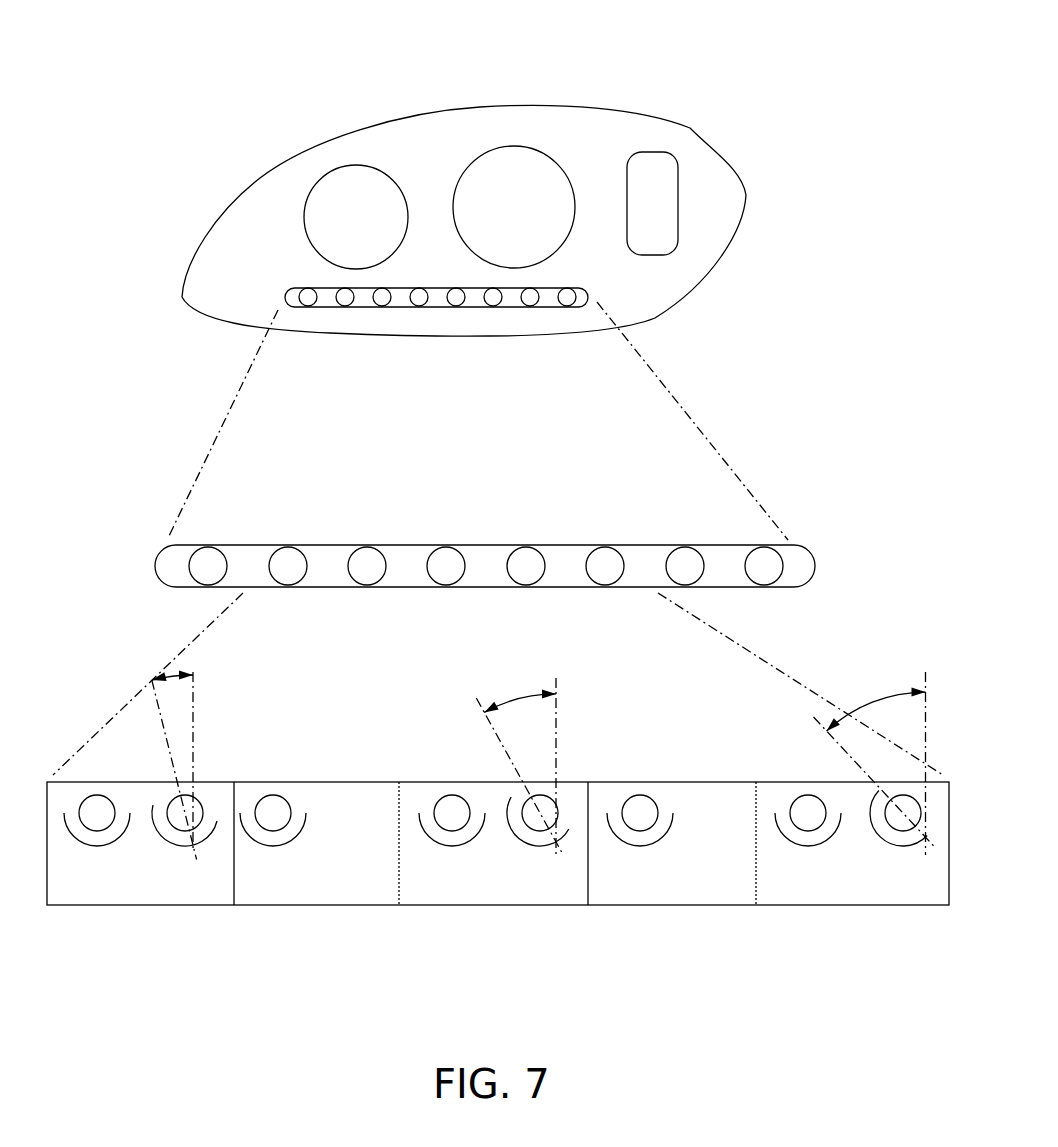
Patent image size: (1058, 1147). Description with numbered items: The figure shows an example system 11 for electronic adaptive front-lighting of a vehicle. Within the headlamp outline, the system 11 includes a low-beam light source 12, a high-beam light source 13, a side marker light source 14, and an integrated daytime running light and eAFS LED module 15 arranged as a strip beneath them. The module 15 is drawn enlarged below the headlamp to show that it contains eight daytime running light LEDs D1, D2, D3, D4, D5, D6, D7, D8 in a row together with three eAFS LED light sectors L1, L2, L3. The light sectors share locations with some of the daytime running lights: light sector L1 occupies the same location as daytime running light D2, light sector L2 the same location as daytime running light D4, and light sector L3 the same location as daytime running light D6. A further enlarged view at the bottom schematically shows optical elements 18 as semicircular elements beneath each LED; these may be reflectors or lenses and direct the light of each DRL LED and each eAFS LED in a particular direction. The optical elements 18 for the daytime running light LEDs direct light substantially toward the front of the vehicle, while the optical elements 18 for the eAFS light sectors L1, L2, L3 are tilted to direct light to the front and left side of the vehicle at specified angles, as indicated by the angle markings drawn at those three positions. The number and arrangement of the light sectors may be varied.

The system for electronic adaptive front-lighting 11 is at (233, 120).
The low-beam light source 12 is at (494, 222).
The high-beam light source 13 is at (340, 229).
The side marker light source 14 is at (635, 222).
The integrated daytime running light and eAFS LED module 15 is at (590, 298).
The optical elements 18 is at (529, 845).
The daytime running light LED D1 is at (208, 545).
The daytime running light LED D2 is at (98, 832).
The daytime running light LED D3 is at (273, 832).
The daytime running light LED D4 is at (434, 840).
The daytime running light LED D5 is at (640, 832).
The daytime running light LED D6 is at (808, 832).
The daytime running light LED D7 is at (690, 545).
The daytime running light LED D8 is at (764, 545).
The eAFS LED light sector L1 is at (345, 305).
The eAFS LED light sector L2 is at (418, 305).
The eAFS LED light sector L3 is at (493, 305).